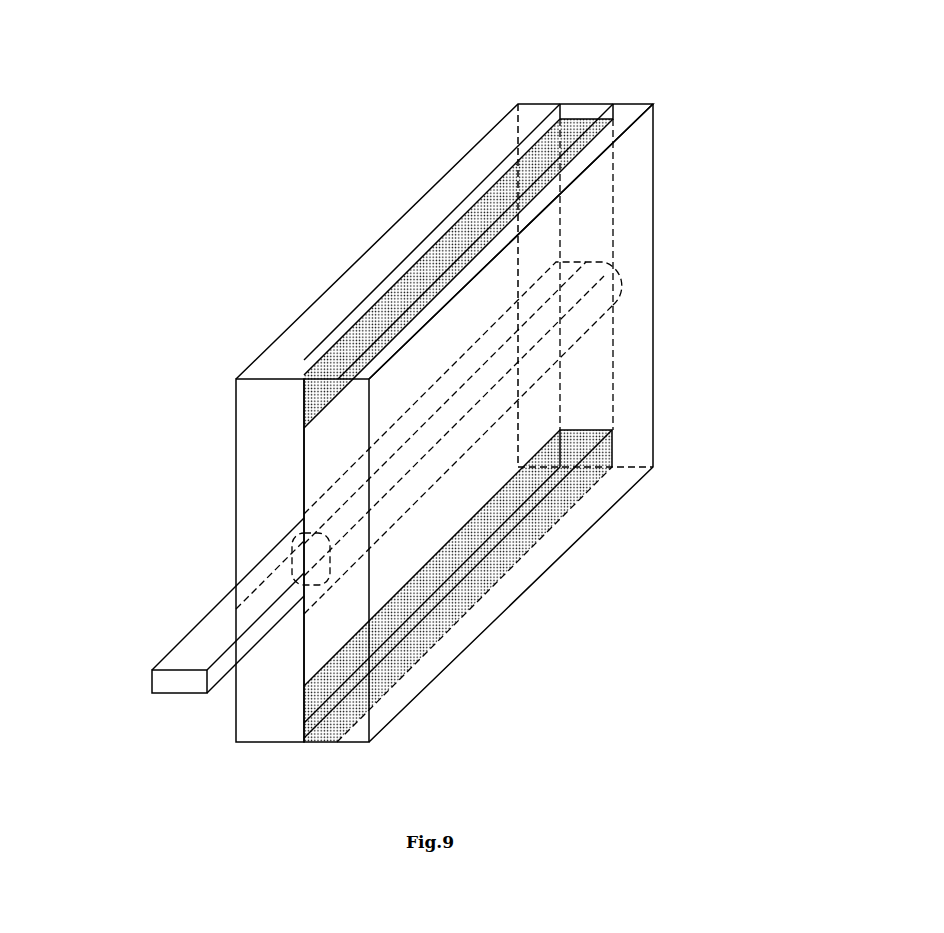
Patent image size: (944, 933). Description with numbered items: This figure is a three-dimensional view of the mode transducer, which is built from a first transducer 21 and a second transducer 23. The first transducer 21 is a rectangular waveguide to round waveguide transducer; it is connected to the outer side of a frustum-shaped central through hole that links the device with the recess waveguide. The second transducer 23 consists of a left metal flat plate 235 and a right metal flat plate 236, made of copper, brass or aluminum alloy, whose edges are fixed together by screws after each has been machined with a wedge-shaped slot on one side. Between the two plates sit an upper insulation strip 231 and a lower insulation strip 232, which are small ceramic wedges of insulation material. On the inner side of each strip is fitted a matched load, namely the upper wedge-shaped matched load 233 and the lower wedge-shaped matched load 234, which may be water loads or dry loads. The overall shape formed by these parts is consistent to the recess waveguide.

The first transducer 21 is at (202, 620).
The second transducer 23 is at (303, 350).
The upper insulation strip 231 is at (562, 113).
The lower insulation strip 232 is at (533, 535).
The upper wedge-shaped matched load 233 is at (602, 147).
The lower wedge-shaped matched load 234 is at (597, 470).
The left metal flat plate 235 is at (256, 737).
The right metal flat plate 236 is at (352, 730).